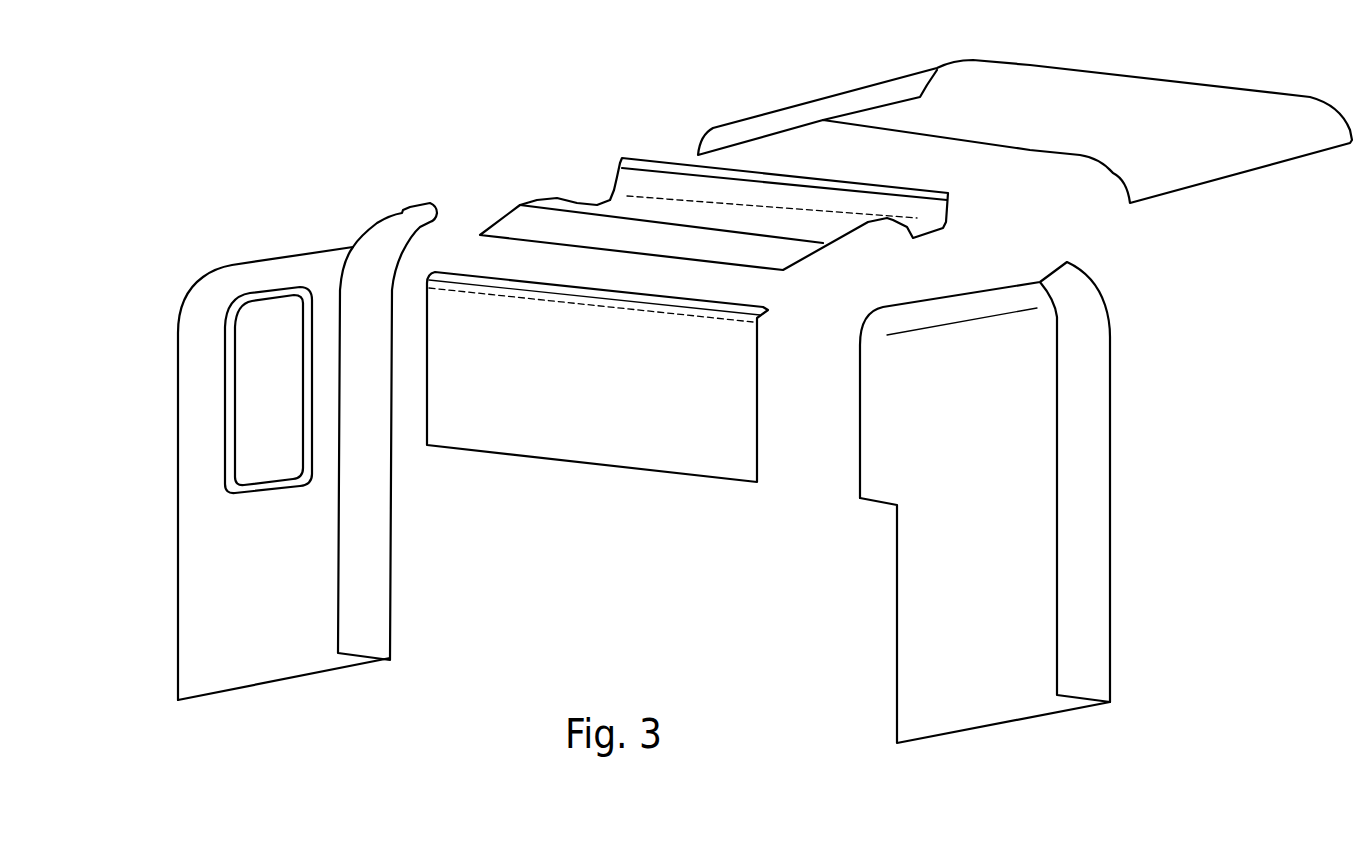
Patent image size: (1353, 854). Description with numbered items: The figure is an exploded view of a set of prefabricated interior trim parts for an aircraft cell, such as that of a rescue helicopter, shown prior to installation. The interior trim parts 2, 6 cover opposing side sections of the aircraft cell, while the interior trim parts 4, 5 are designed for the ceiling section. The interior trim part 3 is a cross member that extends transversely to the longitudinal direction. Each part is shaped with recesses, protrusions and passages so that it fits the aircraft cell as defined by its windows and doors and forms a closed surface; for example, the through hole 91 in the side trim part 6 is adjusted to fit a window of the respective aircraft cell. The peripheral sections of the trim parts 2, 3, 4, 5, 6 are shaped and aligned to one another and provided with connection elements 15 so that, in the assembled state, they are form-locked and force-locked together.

The interior trim part 2 is at (1085, 412).
The interior trim part 3 is at (588, 377).
The interior trim part 4 is at (643, 212).
The interior trim part 5 is at (1185, 128).
The interior trim part 6 is at (260, 635).
The connection element 15 is at (967, 310).
The through hole 91 is at (262, 362).